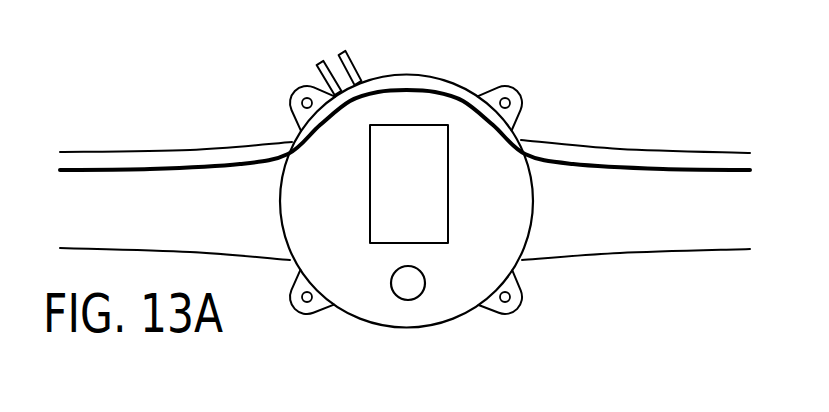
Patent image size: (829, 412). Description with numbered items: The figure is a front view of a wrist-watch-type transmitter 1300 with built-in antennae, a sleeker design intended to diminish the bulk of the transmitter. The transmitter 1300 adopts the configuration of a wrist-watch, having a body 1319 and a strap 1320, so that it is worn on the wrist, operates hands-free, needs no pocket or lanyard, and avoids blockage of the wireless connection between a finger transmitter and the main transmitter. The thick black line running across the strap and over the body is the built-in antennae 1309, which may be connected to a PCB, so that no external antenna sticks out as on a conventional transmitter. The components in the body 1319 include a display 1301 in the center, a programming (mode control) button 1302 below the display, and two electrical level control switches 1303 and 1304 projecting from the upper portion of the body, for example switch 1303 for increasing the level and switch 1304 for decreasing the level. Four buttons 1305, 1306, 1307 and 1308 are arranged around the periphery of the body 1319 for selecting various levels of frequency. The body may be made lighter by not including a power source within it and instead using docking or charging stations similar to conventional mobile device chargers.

The transmitter 1300 is at (169, 58).
The display 1301 is at (432, 200).
The programming (mode control) button 1302 is at (409, 301).
The electrical level control switch 1303 is at (318, 65).
The electrical level control switch 1304 is at (352, 52).
The button 1305 is at (288, 98).
The button 1306 is at (304, 318).
The button 1307 is at (522, 98).
The button 1308 is at (524, 290).
The built-in antennae 1309 is at (190, 171).
The body 1319 is at (411, 74).
The strap 1320 is at (683, 238).